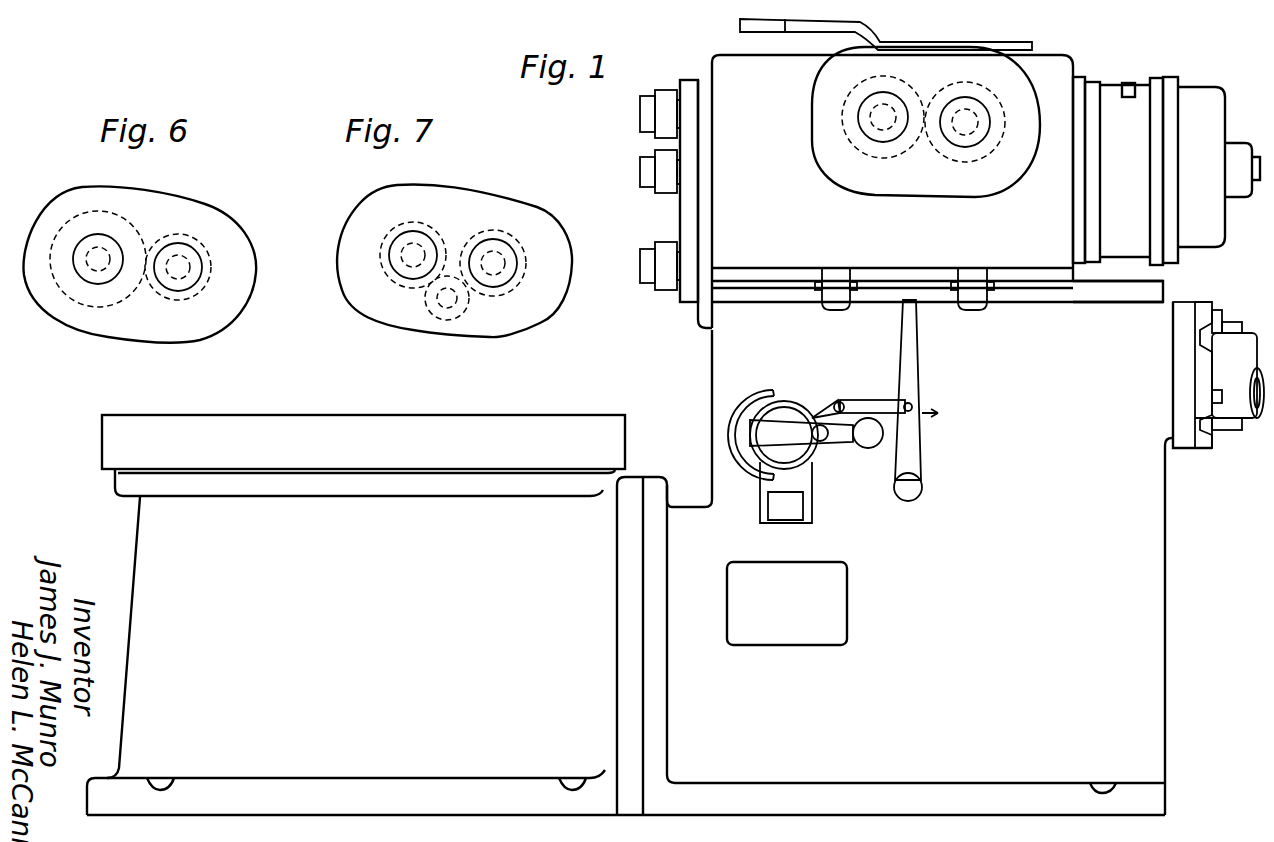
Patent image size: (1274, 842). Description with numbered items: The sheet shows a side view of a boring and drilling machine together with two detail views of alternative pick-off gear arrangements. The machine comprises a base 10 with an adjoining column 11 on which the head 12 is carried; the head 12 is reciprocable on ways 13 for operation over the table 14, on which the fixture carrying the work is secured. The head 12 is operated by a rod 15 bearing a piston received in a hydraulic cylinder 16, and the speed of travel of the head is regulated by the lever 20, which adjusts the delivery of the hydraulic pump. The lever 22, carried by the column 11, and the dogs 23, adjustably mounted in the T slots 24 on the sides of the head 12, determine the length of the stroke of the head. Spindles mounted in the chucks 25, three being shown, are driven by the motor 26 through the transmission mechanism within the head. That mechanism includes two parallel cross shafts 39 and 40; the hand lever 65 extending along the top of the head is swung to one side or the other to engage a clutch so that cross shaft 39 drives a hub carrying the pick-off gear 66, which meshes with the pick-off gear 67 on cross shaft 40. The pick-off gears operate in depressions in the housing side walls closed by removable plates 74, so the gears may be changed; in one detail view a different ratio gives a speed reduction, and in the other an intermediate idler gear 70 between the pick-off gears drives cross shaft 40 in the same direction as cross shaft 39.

In FIG. 1, the base 10 is at (160, 524).
In FIG. 1, the column 11 is at (1150, 548).
In FIG. 1, the head 12 is at (1067, 66).
In FIG. 1, the ways 13 is at (1165, 290).
In FIG. 1, the table 14 is at (625, 445).
In FIG. 1, the rod 15 is at (1252, 378).
In FIG. 1, the hydraulic cylinder 16 is at (1240, 420).
In FIG. 1, the lever 20 is at (836, 442).
In FIG. 1, the lever 22 is at (918, 373).
In FIG. 1, the dogs 23 is at (840, 312).
In FIG. 1, the T slots 24 is at (1005, 282).
In FIG. 1, the chucks 25 is at (642, 158).
In FIG. 1, the motor 26 is at (1148, 110).
In FIG. 6, the cross shaft 39 is at (180, 262).
In FIG. 7, the cross shaft 39 is at (496, 260).
In FIG. 6, the cross shaft 40 is at (100, 256).
In FIG. 7, the cross shaft 40 is at (416, 252).
In FIG. 1, the hand lever 65 is at (838, 38).
In FIG. 1, the pick-off gear 66 is at (971, 168).
In FIG. 6, the pick-off gear 66 is at (183, 298).
In FIG. 7, the pick-off gear 66 is at (512, 288).
In FIG. 1, the pick-off gear 67 is at (893, 155).
In FIG. 6, the pick-off gear 67 is at (100, 305).
In FIG. 7, the pick-off gear 67 is at (385, 280).
In FIG. 7, the intermediate idler gear 70 is at (460, 315).
In FIG. 1, the removable plates 74 is at (826, 157).
In FIG. 6, the removable plates 74 is at (218, 208).
In FIG. 7, the removable plates 74 is at (480, 187).